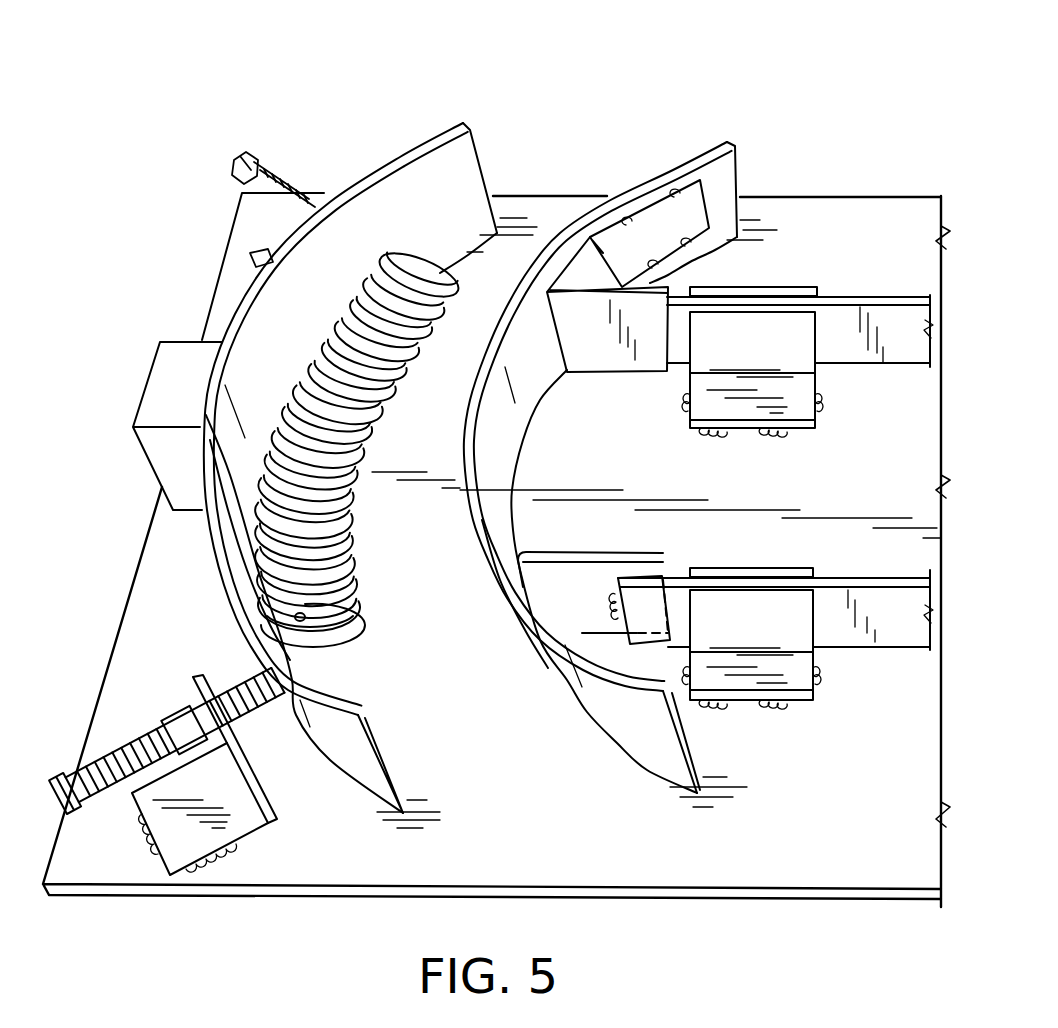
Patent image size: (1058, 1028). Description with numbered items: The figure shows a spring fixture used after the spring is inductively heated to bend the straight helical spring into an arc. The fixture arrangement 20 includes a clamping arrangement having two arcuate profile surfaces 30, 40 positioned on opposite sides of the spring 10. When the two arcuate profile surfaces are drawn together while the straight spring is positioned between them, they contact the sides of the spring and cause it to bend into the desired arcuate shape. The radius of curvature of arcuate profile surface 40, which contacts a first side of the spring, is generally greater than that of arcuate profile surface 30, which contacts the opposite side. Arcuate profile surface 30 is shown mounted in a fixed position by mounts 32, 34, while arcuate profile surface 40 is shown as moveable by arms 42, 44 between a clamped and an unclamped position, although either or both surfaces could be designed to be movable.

The spring 10 is at (372, 577).
The fixture arrangement 20 is at (397, 90).
The arcuate profile surface 30 is at (450, 163).
The mount 32 is at (321, 195).
The mount 34 is at (190, 681).
The arcuate profile surface 40 is at (598, 703).
The arm 42 is at (901, 350).
The arm 44 is at (890, 635).